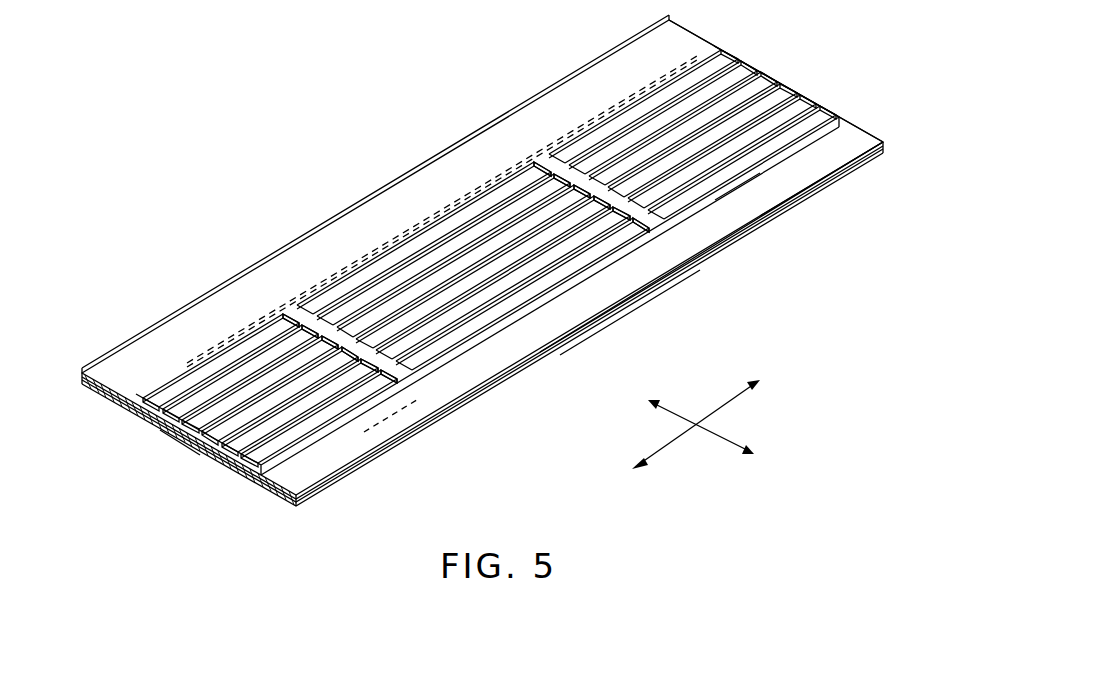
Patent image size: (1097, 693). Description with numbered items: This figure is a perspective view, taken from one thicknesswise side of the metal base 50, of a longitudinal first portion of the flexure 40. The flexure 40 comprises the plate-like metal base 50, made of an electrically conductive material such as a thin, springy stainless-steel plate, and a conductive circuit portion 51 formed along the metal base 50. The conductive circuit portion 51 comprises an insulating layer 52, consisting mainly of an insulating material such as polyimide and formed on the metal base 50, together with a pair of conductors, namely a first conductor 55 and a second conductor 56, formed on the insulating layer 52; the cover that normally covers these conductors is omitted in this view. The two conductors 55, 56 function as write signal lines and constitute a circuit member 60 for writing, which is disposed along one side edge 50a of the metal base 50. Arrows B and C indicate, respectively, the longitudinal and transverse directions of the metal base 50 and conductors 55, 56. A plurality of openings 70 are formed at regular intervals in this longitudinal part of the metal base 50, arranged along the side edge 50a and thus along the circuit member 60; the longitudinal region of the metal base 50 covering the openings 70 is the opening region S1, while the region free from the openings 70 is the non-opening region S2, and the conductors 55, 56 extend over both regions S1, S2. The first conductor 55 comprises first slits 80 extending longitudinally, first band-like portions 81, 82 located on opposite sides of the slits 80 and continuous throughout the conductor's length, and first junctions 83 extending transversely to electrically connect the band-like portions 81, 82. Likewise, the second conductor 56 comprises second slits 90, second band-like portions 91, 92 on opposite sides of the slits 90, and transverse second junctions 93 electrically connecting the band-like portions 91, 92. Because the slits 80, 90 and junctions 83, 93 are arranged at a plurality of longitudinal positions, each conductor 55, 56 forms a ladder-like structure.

The flexure 40 is at (688, 292).
The metal base 50 is at (224, 462).
The one side edge 50a is at (806, 213).
The conductive circuit portion 51 is at (803, 62).
The insulating layer 52 is at (576, 318).
The first conductor 55 is at (488, 334).
The second conductor 56 is at (340, 282).
The circuit member for writing 60 is at (254, 303).
The openings 70 is at (364, 432).
The first slits 80 is at (600, 246).
The first band-like portion 81 is at (466, 348).
The first band-like portion 82 is at (562, 325).
The first junctions 83 is at (684, 222).
The second slits 90 is at (516, 226).
The second band-like portion 91 is at (440, 278).
The second band-like portion 92 is at (384, 270).
The second junctions 93 is at (320, 318).
The opening region S1 is at (720, 206).
The non-opening region S2 is at (173, 452).
The arrow B is at (696, 437).
The arrow C is at (701, 427).